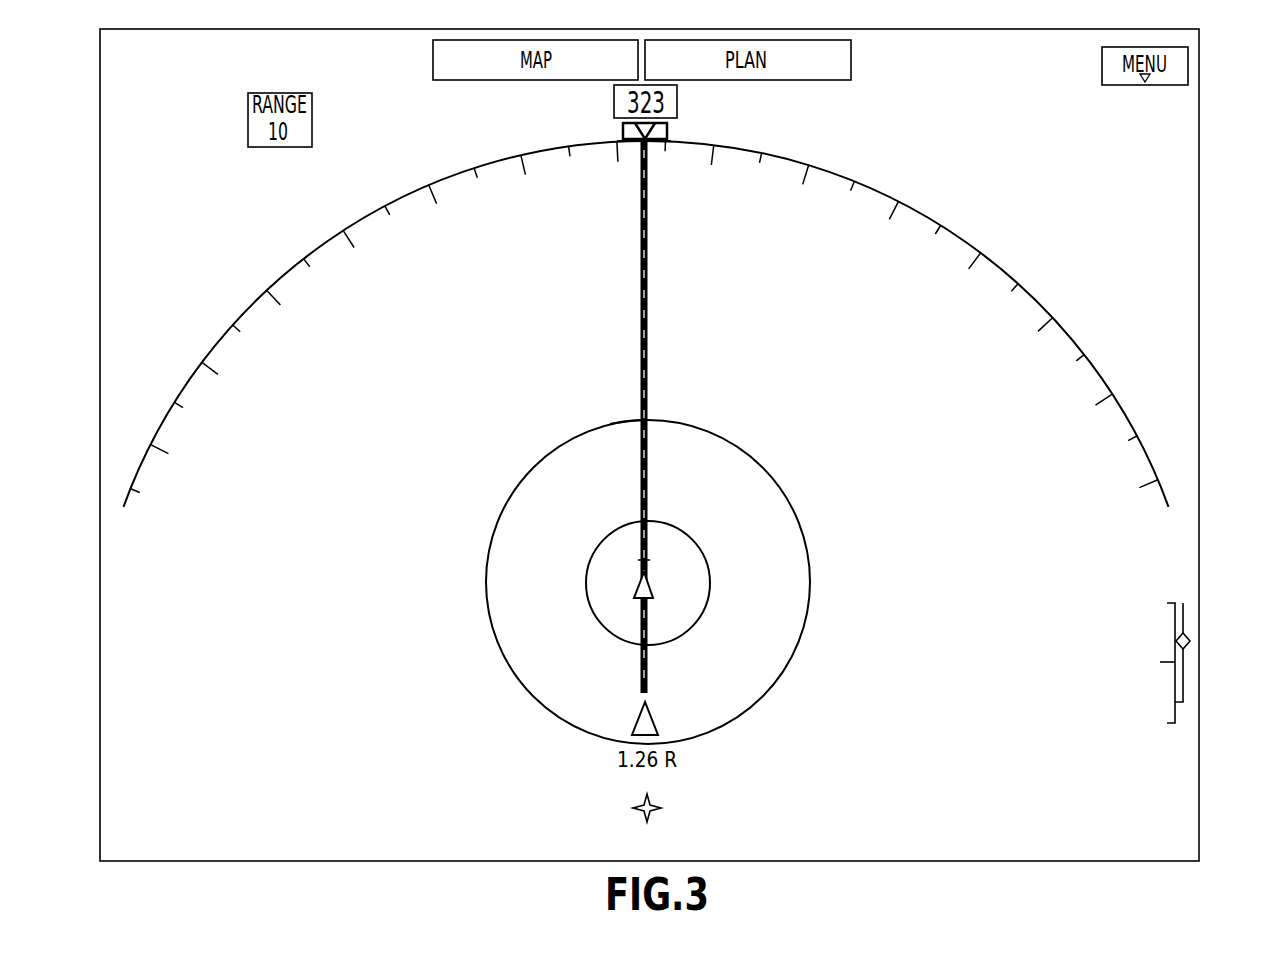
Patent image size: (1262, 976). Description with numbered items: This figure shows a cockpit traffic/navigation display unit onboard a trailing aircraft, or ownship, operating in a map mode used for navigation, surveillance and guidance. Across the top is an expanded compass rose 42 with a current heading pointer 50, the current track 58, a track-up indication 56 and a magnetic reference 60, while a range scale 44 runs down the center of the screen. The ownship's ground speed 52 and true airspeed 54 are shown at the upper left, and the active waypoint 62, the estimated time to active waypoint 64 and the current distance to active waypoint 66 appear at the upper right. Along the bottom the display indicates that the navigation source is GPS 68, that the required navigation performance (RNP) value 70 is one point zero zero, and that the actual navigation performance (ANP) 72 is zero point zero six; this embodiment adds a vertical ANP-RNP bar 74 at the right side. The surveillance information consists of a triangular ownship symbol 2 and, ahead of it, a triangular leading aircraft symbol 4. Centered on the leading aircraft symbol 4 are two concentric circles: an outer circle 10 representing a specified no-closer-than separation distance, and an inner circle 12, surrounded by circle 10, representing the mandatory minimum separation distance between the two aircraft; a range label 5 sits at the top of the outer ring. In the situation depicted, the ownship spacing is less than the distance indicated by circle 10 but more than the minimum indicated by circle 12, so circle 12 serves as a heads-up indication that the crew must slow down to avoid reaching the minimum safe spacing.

The ownship symbol 2 is at (655, 716).
The leading aircraft symbol 4 is at (652, 580).
The range ring label 5 is at (625, 424).
The circle 10 is at (812, 588).
The circle 12 is at (690, 537).
The expanded compass rose 42 is at (890, 193).
The range scale 44 is at (650, 240).
The current heading pointer 50 is at (638, 143).
The ground speed 52 is at (133, 85).
The true airspeed 54 is at (213, 85).
The track-up indication 56 is at (574, 97).
The current track 58 is at (684, 122).
The magnetic reference 60 is at (720, 99).
The active waypoint 62 is at (1183, 103).
The estimated time to active waypoint 64 is at (1183, 128).
The current distance to active waypoint 66 is at (1183, 153).
The GPS 68 is at (1108, 851).
The required navigation performance (RNP) value 70 is at (590, 830).
The actual navigation performance (ANP) 72 is at (701, 828).
The vertical ANP-RNP bar 74 is at (1168, 736).